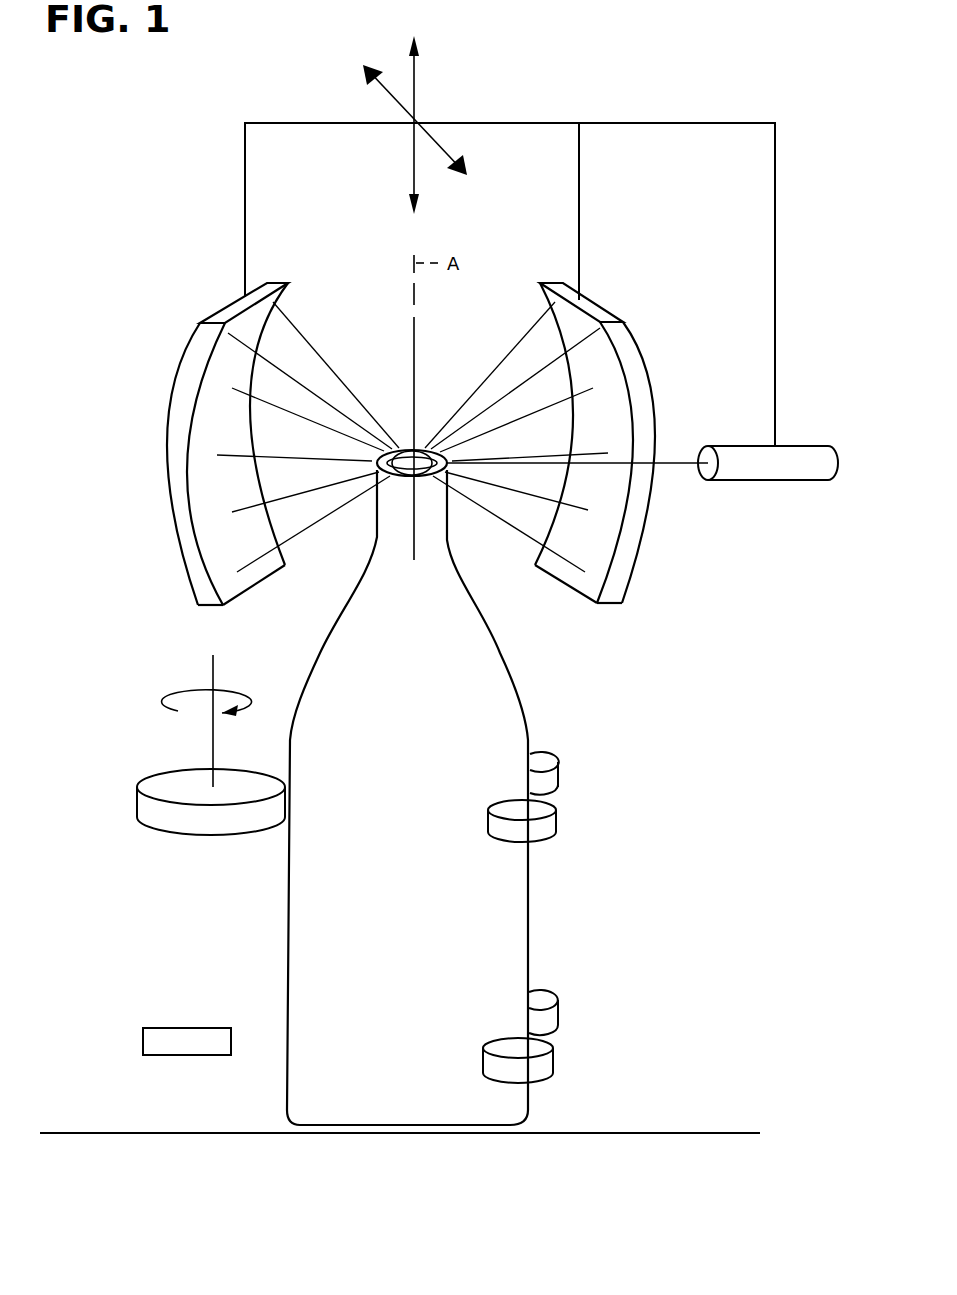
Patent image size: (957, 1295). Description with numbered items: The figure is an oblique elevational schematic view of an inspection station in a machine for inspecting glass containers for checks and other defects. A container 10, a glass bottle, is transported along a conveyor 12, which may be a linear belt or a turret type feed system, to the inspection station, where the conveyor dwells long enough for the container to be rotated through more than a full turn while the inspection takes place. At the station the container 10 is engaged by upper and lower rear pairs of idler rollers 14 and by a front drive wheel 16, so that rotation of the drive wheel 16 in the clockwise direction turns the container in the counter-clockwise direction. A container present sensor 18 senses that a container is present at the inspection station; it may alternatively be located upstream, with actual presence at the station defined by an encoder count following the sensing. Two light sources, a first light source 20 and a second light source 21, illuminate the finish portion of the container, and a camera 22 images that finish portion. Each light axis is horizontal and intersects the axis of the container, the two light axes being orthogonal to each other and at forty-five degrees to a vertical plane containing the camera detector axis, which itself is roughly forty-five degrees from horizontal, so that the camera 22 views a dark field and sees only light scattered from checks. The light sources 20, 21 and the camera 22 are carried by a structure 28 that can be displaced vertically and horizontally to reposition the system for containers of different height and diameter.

The container 10 is at (513, 680).
The conveyor 12 is at (637, 1133).
The idler rollers 14 is at (548, 779).
The front drive wheel 16 is at (182, 820).
The container present sensor 18 is at (150, 1042).
The light source #1 20 is at (210, 555).
The light source #2 21 is at (635, 377).
The camera 22 is at (766, 467).
The structure 28 is at (653, 122).